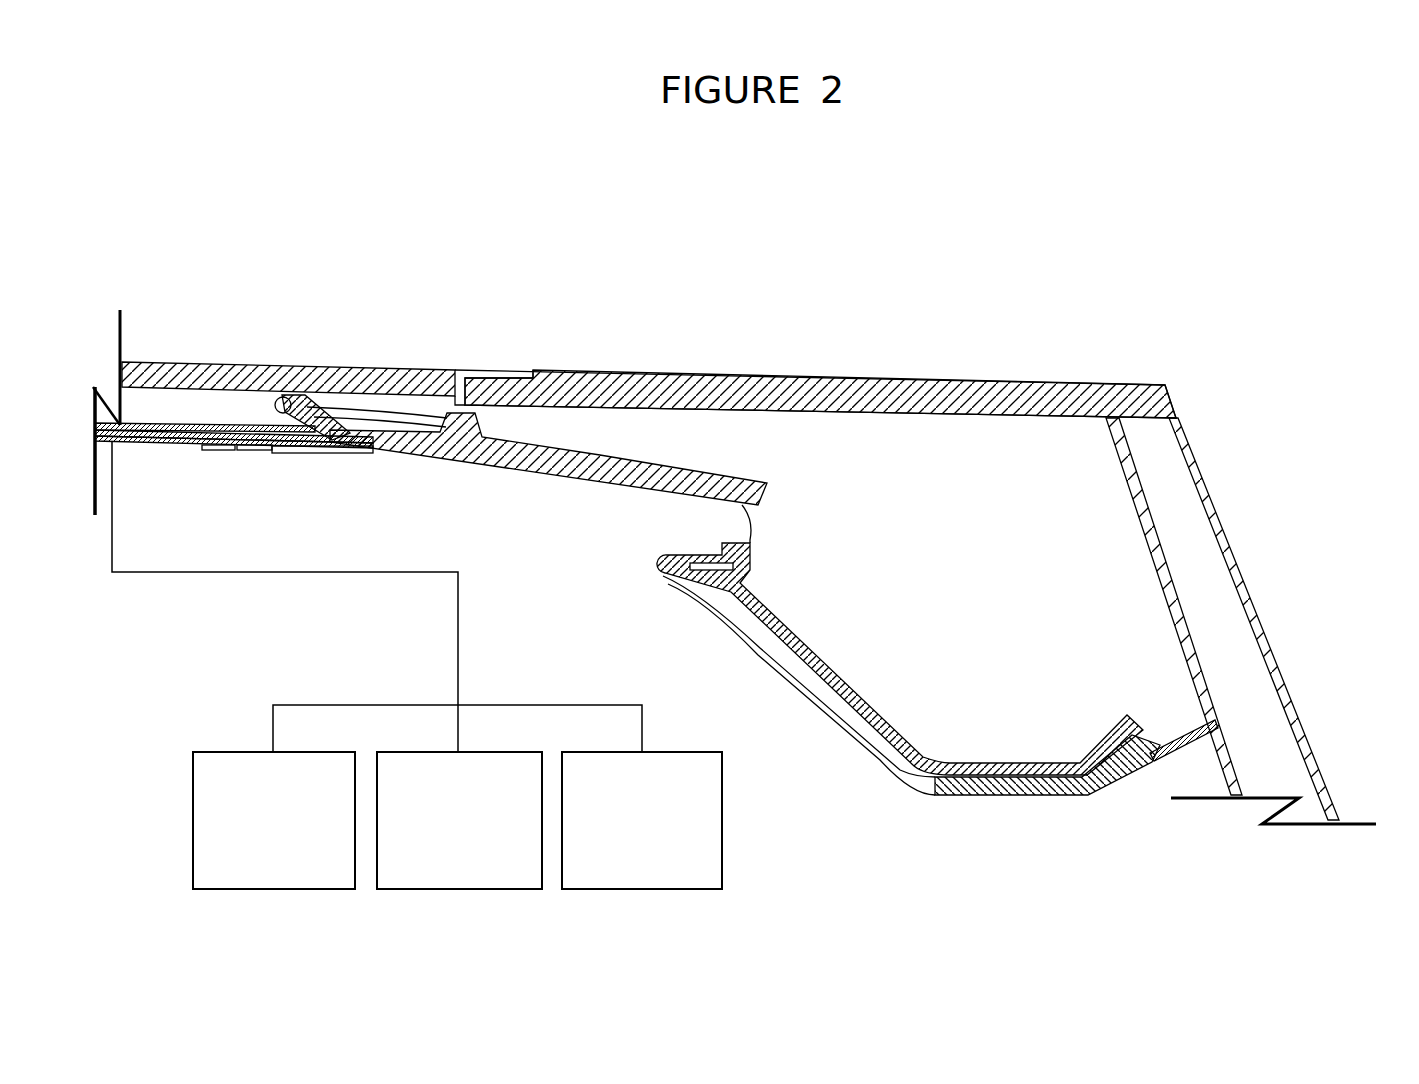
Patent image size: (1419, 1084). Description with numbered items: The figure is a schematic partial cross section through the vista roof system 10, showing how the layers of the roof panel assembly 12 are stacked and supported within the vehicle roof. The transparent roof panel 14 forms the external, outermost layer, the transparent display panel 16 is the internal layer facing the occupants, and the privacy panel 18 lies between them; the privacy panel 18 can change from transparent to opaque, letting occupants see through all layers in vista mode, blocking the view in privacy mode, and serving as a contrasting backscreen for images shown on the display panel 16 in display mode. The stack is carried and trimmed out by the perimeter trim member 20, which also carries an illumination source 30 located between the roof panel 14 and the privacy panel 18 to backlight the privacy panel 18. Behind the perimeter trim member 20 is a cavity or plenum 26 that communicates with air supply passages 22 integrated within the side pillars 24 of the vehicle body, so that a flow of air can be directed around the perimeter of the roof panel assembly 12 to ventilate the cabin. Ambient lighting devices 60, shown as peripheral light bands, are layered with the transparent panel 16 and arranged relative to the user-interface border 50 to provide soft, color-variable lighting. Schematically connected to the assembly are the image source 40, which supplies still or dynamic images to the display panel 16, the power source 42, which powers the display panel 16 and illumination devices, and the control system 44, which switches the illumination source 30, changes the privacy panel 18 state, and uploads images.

The vista roof system 10 is at (246, 176).
The roof panel assembly 12 is at (421, 294).
The transparent roof panel 14 is at (160, 360).
The display panel 16 is at (130, 442).
The privacy panel 18 is at (190, 442).
The perimeter trim member 20 is at (455, 455).
The air supply passages 22 is at (1275, 745).
The side pillars 24 is at (1218, 758).
The plenum 26 is at (970, 652).
The illumination source 30 is at (277, 405).
The image source 40 is at (440, 867).
The power source 42 is at (255, 867).
The control system 44 is at (624, 867).
The user-interface border 50 is at (325, 452).
The ambient lighting devices 60 is at (223, 450).